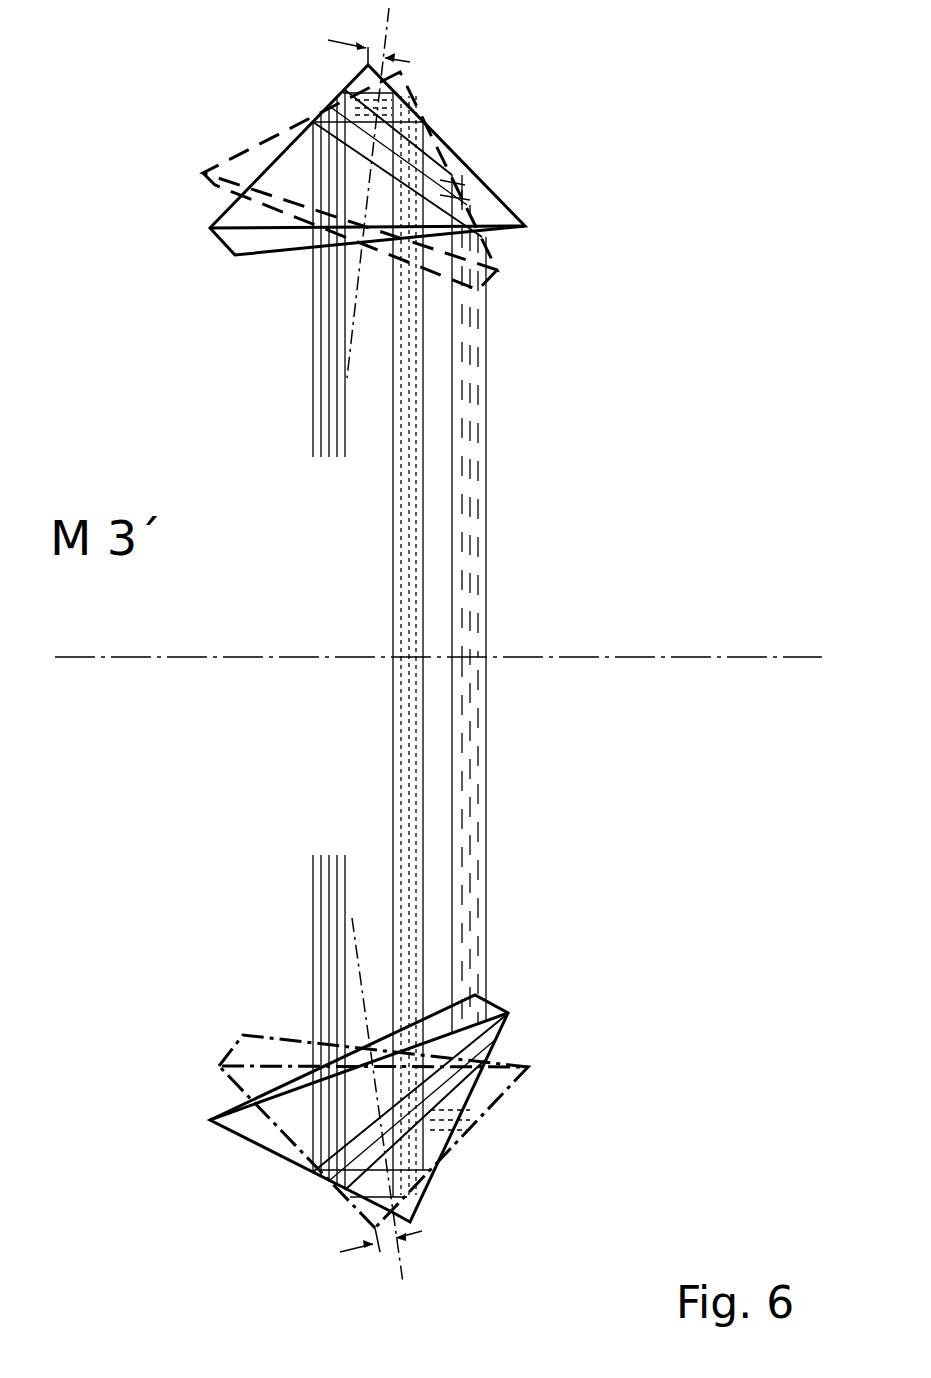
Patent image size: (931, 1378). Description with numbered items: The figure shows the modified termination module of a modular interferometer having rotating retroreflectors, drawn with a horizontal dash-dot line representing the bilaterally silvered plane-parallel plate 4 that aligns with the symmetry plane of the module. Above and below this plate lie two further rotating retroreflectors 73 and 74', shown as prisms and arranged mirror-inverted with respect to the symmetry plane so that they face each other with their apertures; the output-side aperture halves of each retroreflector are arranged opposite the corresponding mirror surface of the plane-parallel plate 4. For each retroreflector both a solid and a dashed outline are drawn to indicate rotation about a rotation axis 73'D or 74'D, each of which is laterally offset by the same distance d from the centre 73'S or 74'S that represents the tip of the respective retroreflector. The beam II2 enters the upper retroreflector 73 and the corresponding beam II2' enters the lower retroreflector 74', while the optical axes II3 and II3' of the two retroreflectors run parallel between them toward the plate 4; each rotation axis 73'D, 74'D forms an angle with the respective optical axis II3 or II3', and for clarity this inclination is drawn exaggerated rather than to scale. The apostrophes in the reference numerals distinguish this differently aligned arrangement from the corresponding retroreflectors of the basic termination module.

The bilaterally silvered plane-parallel plate 4 is at (527, 657).
The rotating retroreflector 73 is at (328, 177).
The centre of the rotating retroreflector 73'S is at (376, 57).
The rotation axis of the rotating retroreflector 73'D is at (425, 189).
The rotating retroreflector 74' is at (343, 1111).
The centre of the rotating retroreflector 74'S is at (396, 1220).
The rotation axis of the rotating retroreflector 74'D is at (441, 1116).
The lateral offset distance d is at (375, 637).
The light beam II2 is at (285, 273).
The optical axis of the rotating retroreflector II3 is at (450, 375).
The light beam II2' is at (296, 1021).
The optical axis of the rotating retroreflector II3' is at (450, 927).